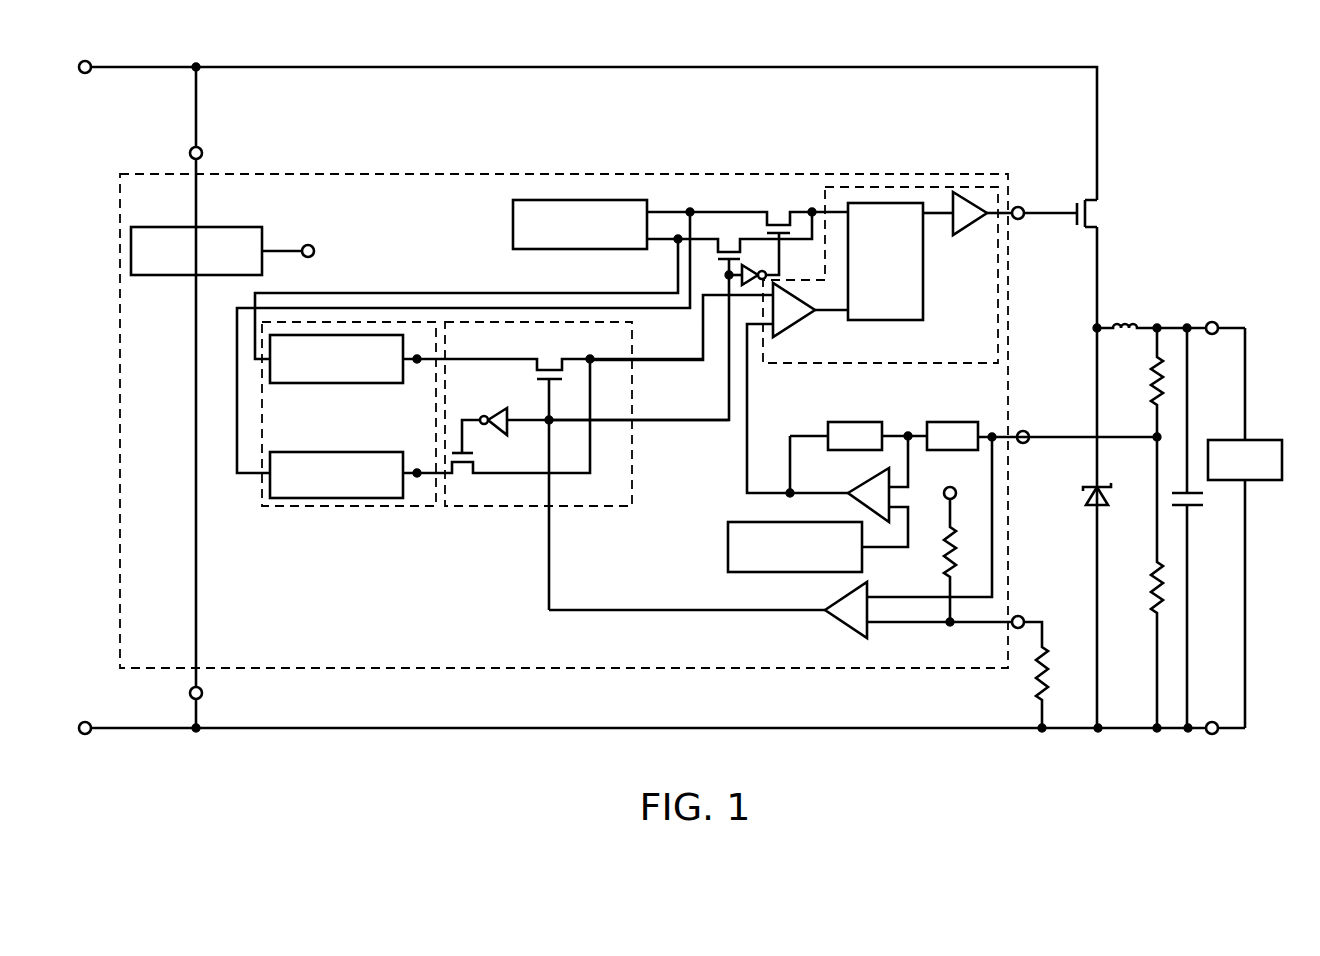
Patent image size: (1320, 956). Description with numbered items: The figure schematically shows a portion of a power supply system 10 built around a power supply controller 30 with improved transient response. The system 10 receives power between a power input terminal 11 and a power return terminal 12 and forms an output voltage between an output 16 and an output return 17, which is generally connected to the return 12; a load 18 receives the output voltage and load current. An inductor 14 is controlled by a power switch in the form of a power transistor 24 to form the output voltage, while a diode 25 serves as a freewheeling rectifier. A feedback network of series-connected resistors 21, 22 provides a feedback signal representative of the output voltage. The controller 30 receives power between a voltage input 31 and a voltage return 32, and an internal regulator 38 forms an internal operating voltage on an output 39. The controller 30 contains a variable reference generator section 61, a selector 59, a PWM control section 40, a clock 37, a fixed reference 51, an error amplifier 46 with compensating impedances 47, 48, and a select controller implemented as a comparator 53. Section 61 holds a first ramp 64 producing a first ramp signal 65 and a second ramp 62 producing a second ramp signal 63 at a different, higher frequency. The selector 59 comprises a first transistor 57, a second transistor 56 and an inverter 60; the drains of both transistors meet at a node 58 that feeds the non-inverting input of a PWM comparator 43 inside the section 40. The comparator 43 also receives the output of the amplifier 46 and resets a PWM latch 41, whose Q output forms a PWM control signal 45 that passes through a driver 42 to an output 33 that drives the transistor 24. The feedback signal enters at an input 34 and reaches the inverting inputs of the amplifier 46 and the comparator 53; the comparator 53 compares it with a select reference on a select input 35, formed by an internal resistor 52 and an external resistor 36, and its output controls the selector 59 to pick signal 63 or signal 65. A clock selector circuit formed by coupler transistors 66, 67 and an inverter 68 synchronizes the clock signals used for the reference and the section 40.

The power supply system 10 is at (933, 788).
The power input terminal 11 is at (90, 73).
The power return terminal 12 is at (90, 722).
The inductor 14 is at (1125, 325).
The output 16 is at (1214, 322).
The output return 17 is at (1216, 734).
The load 18 is at (1256, 480).
The resistor 21 is at (1150, 390).
The resistor 22 is at (1150, 602).
The power transistor 24 is at (1097, 213).
The diode 25 is at (1090, 515).
The power supply controller 30 is at (481, 172).
The voltage input 31 is at (202, 150).
The voltage return 32 is at (202, 690).
The output 33 is at (1022, 207).
The input 34 is at (1026, 430).
The select input 35 is at (1023, 616).
The external resistor 36 is at (1050, 674).
The clock 37 is at (548, 250).
The internal regulator 38 is at (219, 227).
The output 39 is at (312, 246).
The PWM control section 40 is at (804, 363).
The PWM latch 41 is at (880, 321).
The driver 42 is at (969, 228).
The PWM comparator 43 is at (792, 330).
The PWM control signal 45 is at (933, 220).
The error amplifier 46 is at (860, 480).
The impedance 47 is at (936, 420).
The impedance 48 is at (840, 420).
The reference 51 is at (770, 572).
The resistor 52 is at (956, 540).
The comparator 53 is at (835, 620).
The second transistor 56 is at (548, 362).
The first transistor 57 is at (462, 474).
The node 58 is at (591, 355).
The selector 59 is at (470, 506).
The inverter 60 is at (503, 412).
The variable reference generator section 61 is at (335, 506).
The second ramp generator 62 is at (290, 383).
The second ramp signal 63 is at (420, 364).
The first ramp generator 64 is at (368, 452).
The first ramp signal 65 is at (418, 470).
The coupler transistor 66 is at (778, 223).
The coupler transistor 67 is at (729, 245).
The inverter 68 is at (740, 287).